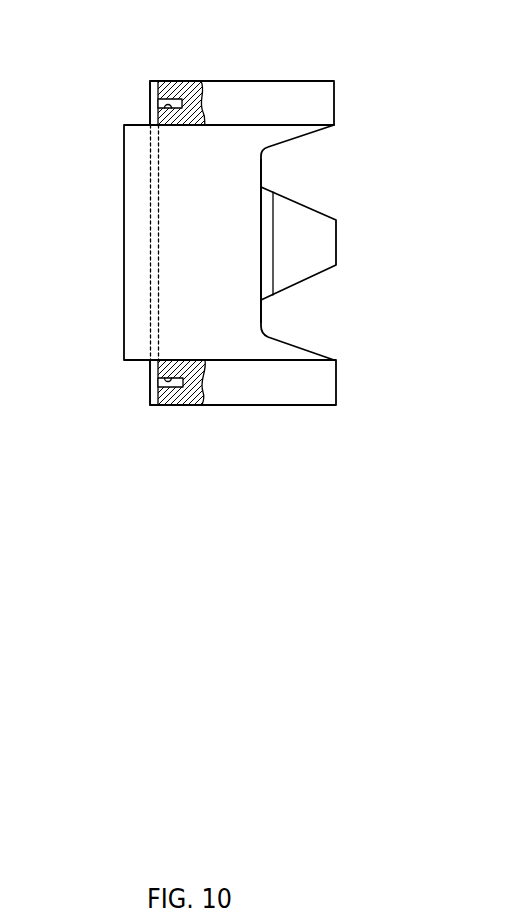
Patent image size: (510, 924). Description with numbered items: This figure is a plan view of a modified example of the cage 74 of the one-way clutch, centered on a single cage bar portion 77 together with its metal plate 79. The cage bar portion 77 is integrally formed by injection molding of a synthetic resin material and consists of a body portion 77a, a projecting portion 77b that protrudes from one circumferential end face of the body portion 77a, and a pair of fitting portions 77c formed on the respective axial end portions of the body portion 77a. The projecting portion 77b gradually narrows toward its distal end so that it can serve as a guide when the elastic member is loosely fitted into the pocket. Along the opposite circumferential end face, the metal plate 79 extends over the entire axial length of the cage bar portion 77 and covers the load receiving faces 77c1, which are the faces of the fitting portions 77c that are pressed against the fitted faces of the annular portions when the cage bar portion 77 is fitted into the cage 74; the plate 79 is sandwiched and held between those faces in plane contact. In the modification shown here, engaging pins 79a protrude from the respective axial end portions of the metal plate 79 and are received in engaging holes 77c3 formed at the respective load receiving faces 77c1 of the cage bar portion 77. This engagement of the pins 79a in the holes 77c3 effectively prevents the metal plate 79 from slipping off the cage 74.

The cage 74 is at (110, 230).
The cage bar portion 77 is at (122, 175).
The body portion 77a is at (243, 313).
The projecting portion 77b is at (316, 223).
The fitting portion 77c is at (266, 93).
The load receiving face 77c1 is at (149, 82).
The engaging hole 77c3 is at (170, 109).
The metal plate 79 is at (150, 103).
The engaging pin 79a is at (177, 99).